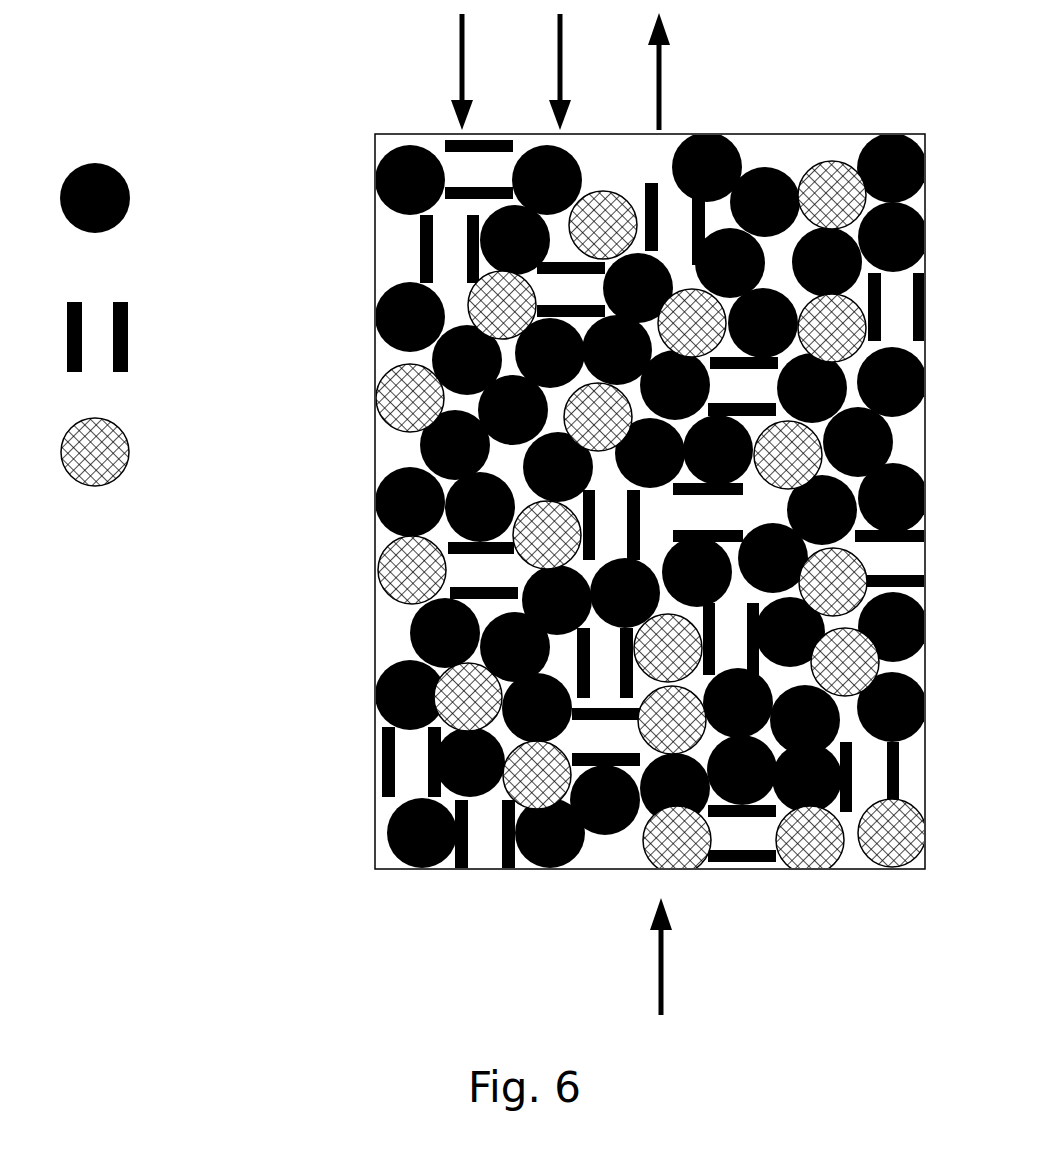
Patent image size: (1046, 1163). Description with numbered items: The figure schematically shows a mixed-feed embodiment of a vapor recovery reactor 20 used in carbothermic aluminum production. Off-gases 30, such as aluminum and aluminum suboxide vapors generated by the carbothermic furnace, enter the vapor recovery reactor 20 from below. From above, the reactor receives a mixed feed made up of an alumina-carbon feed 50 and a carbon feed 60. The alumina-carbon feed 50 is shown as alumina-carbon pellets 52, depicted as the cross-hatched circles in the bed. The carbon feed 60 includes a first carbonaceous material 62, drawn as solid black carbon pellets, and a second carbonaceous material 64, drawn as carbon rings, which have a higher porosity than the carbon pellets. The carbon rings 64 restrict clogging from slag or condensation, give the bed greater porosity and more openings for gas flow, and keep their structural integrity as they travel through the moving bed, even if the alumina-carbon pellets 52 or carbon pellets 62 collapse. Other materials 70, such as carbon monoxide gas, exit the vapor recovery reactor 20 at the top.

The vapor recovery reactor 20 is at (375, 620).
The off-gases 30 is at (688, 956).
The alumina-carbon feed 50 is at (577, 72).
The alumina-carbon pellets 52 is at (118, 452).
The carbon feed 60 is at (479, 72).
The first carbonaceous material 62 is at (118, 198).
The second carbonaceous material 64 is at (121, 337).
The other materials 70 is at (680, 71).